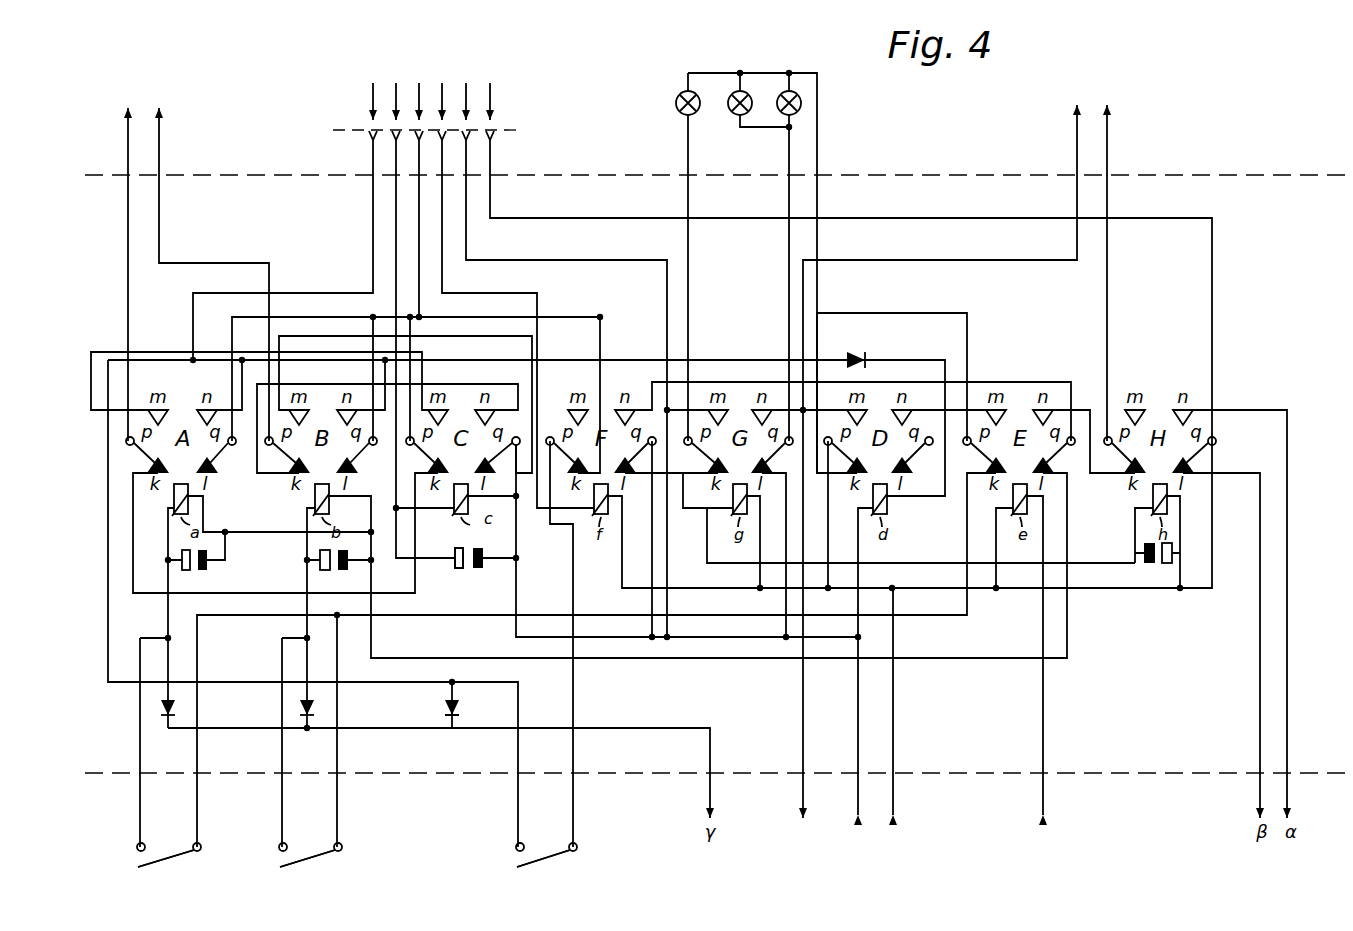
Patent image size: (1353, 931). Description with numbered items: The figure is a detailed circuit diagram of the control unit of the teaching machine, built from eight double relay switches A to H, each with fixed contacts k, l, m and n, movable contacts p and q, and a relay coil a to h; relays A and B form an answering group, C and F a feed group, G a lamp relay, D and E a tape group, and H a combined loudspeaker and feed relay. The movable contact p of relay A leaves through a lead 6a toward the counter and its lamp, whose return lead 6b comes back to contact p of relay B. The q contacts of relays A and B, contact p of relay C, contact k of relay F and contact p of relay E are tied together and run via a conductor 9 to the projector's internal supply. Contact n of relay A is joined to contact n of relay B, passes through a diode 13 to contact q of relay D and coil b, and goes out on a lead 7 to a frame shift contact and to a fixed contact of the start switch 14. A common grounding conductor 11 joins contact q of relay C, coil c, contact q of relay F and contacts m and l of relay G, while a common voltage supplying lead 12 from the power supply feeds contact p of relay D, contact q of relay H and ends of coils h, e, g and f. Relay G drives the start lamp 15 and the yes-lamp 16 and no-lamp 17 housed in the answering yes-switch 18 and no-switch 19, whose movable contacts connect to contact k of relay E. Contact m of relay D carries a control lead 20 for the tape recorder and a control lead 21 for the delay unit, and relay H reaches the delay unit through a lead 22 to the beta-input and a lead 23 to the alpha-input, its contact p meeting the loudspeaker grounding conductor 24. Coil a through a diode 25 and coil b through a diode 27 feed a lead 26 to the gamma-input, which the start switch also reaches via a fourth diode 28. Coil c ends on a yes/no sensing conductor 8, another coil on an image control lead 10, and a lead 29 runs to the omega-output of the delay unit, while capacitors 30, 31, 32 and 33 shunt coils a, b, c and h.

The lead 6a is at (124, 262).
The return lead 6b is at (207, 262).
The lead 7 is at (285, 210).
The yes/no sensing conductor 8 is at (453, 314).
The conductor 9 is at (419, 188).
The image control lead 10 is at (512, 284).
The common grounding conductor 11 is at (858, 767).
The common voltage supplying lead 12 is at (895, 767).
The diode 13 is at (862, 346).
The start switch 14 is at (546, 843).
The start lamp 15 is at (698, 257).
The yes-lamp 16 is at (751, 106).
The no-lamp 17 is at (797, 273).
The yes-switch 18 is at (169, 843).
The no-switch 19 is at (310, 843).
The control lead 20 is at (944, 244).
The control lead 21 is at (803, 767).
The lead 22 is at (1258, 767).
The lead 23 is at (1292, 767).
The grounding conductor 24 is at (1109, 260).
The diode 25 is at (161, 730).
The lead 26 is at (708, 765).
The diode 27 is at (301, 730).
The fourth diode 28 is at (471, 705).
The lead 29 is at (1045, 767).
The capacitor 30 is at (208, 572).
The capacitor 31 is at (344, 572).
The capacitor 32 is at (469, 571).
The capacitor 33 is at (1158, 568).